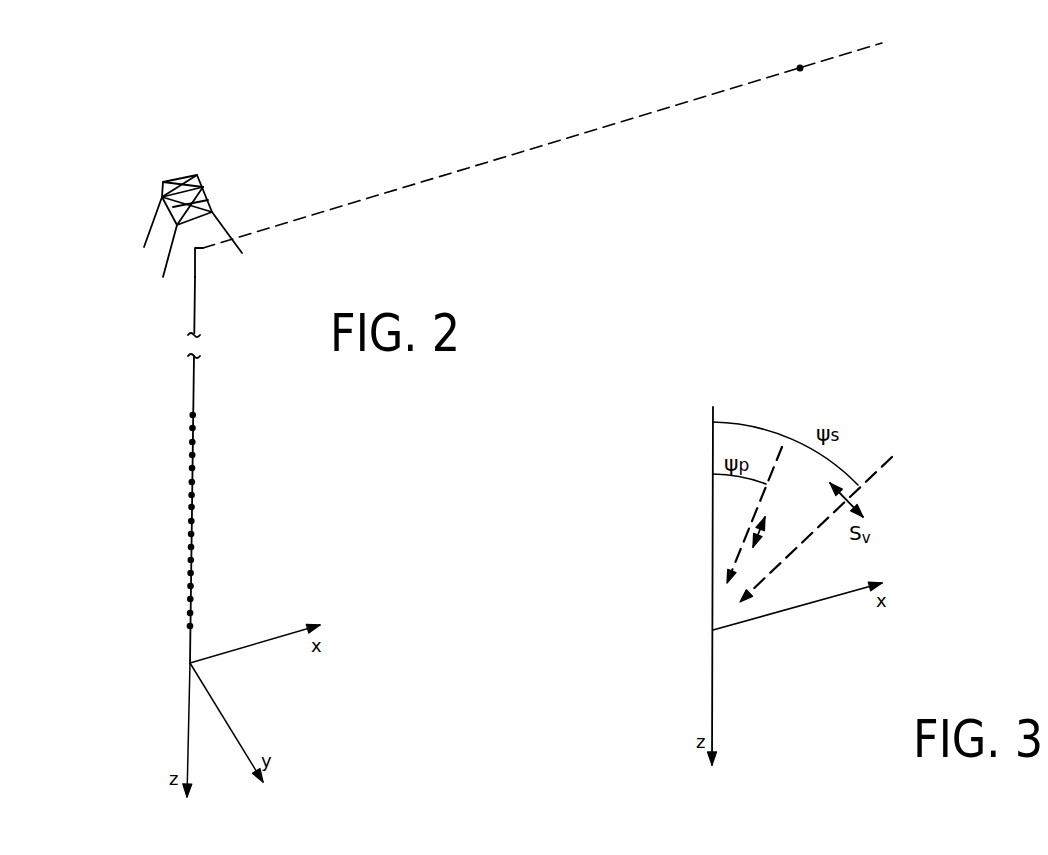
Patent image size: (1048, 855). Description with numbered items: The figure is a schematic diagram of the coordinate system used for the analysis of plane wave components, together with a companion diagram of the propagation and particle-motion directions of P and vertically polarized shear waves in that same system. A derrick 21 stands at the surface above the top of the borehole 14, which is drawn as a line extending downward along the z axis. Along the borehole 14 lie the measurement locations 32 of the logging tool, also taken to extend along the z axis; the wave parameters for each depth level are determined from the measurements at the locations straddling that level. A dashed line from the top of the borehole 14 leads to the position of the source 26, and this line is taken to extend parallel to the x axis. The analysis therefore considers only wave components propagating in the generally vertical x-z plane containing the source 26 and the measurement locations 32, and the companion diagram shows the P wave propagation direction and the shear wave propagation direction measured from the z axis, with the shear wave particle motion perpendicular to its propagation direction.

The borehole 14 is at (193, 387).
The derrick 21 is at (197, 176).
The source 26 is at (800, 68).
The measurement locations 32 is at (191, 560).